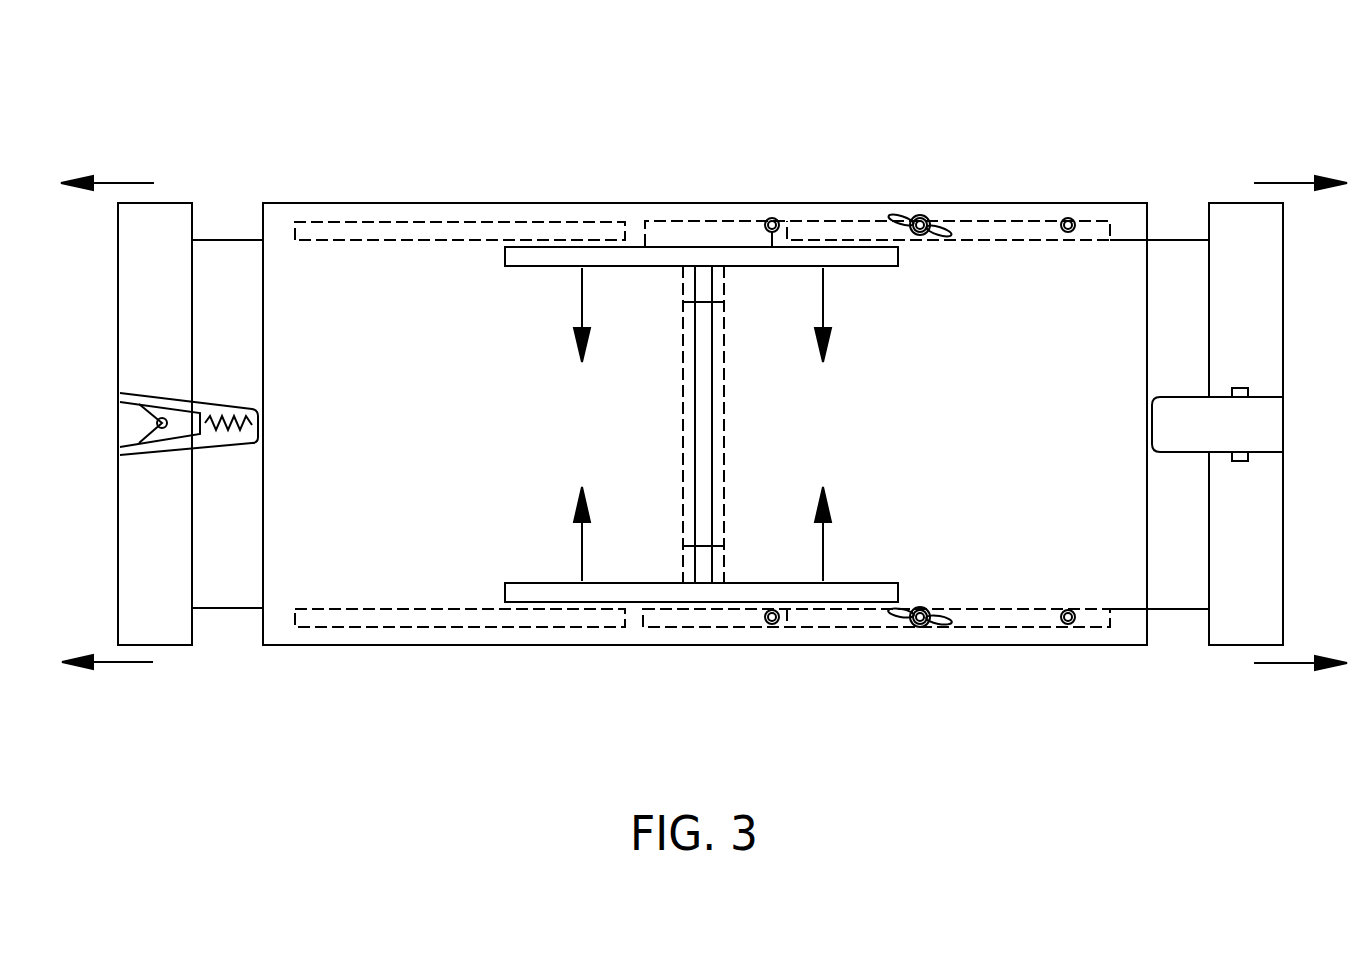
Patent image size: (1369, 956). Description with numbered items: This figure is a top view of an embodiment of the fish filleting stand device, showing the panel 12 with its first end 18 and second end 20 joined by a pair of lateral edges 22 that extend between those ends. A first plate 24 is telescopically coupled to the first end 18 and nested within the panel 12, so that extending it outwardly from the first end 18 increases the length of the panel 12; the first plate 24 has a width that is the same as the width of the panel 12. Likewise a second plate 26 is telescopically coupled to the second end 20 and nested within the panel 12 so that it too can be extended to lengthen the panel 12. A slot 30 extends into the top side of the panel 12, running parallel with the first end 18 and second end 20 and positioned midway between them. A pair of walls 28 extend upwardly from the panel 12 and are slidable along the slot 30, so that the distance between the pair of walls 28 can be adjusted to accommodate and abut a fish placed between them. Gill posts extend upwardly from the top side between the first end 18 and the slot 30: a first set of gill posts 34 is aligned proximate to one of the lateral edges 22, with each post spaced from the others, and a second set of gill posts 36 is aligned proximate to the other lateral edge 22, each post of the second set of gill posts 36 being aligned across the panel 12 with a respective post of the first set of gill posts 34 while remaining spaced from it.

The panel 12 is at (642, 203).
The first end 18 is at (1148, 222).
The second end 20 is at (263, 222).
The lateral edges 22 is at (460, 202).
The first plate 24 is at (1263, 337).
The second plate 26 is at (130, 253).
The pair of walls 28 is at (668, 593).
The slot 30 is at (703, 330).
The first set of gill posts 34 is at (1068, 628).
The second set of gill posts 36 is at (1068, 217).